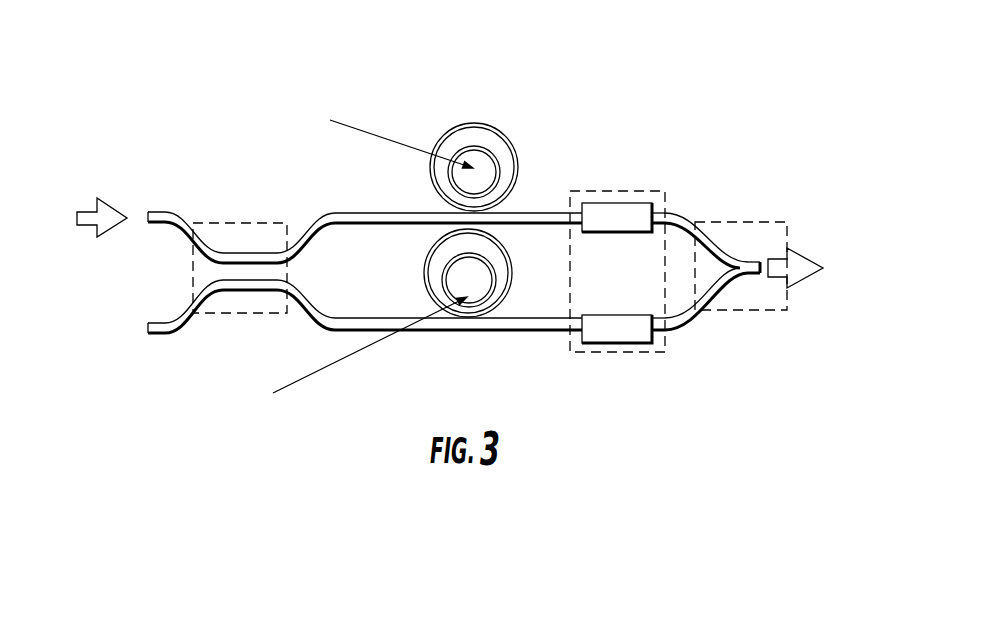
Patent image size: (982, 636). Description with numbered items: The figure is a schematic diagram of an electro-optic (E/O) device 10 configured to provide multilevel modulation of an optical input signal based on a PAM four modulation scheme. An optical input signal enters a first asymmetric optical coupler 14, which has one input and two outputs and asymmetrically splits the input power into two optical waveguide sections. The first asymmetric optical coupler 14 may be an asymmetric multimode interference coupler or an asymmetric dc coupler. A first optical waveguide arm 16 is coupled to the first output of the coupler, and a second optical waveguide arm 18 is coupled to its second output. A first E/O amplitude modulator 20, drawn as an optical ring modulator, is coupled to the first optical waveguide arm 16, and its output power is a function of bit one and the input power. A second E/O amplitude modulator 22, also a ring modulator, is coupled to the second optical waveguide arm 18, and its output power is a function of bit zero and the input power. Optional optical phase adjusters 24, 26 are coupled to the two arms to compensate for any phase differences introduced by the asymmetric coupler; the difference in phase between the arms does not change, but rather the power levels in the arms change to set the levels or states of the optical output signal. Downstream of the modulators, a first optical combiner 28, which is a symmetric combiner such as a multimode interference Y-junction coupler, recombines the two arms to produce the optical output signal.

The electro-optic (E/O) device 10 is at (184, 79).
The first asymmetric optical coupler 14 is at (205, 313).
The first optical waveguide arm 16 is at (325, 211).
The second optical waveguide arm 18 is at (305, 323).
The first E/O amplitude modulator 20 is at (490, 124).
The second E/O amplitude modulator 22 is at (496, 308).
The optical phase adjuster 24 is at (635, 203).
The optical phase adjuster 26 is at (652, 342).
The first optical combiner 28 is at (750, 235).